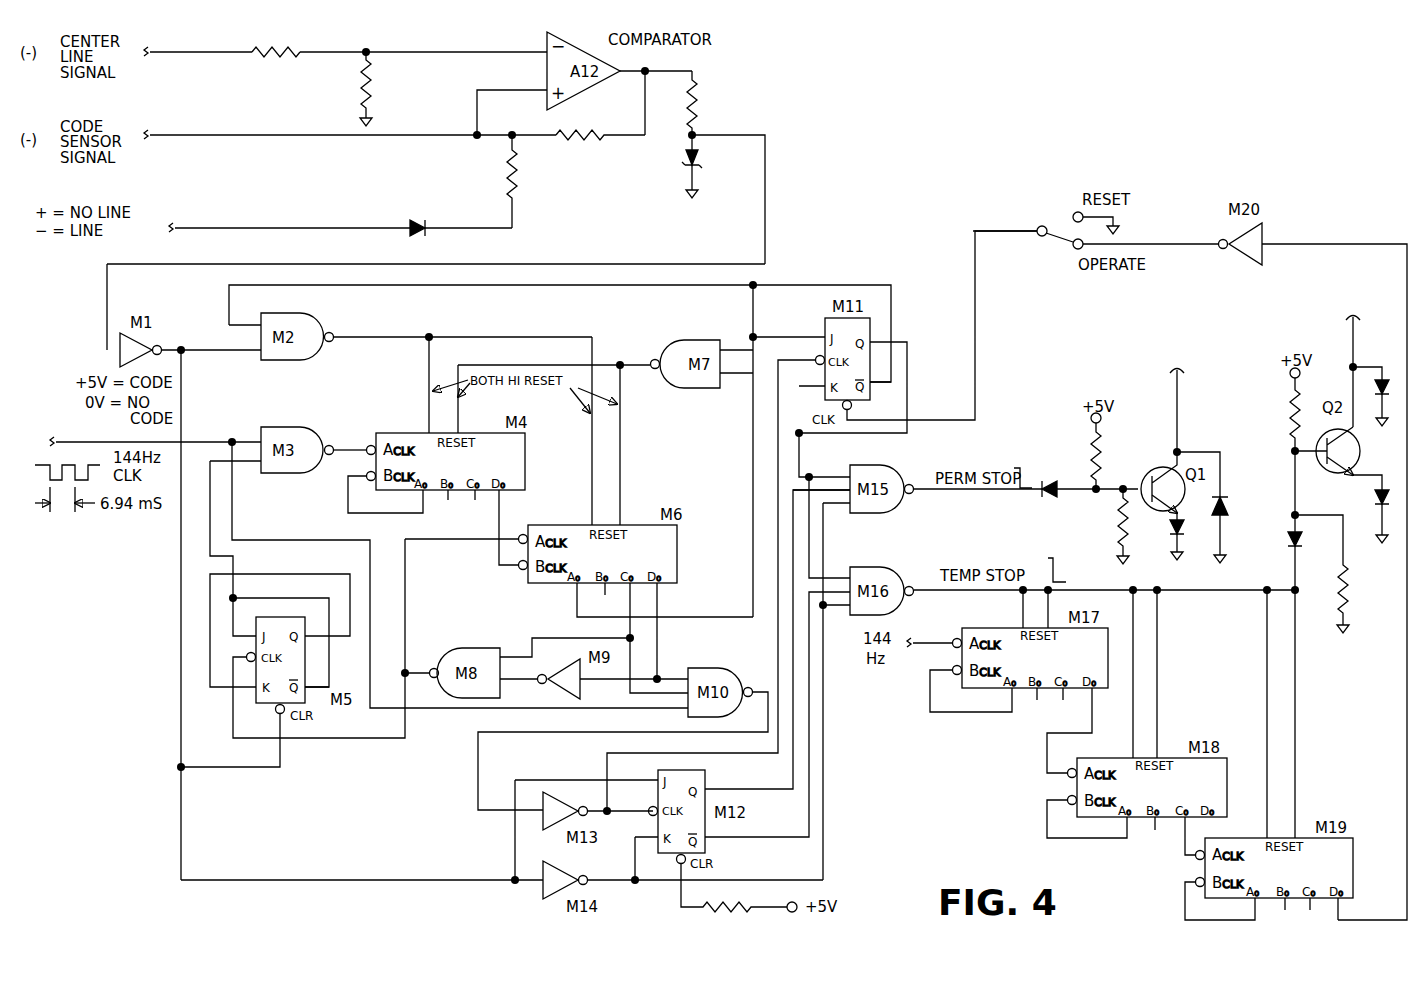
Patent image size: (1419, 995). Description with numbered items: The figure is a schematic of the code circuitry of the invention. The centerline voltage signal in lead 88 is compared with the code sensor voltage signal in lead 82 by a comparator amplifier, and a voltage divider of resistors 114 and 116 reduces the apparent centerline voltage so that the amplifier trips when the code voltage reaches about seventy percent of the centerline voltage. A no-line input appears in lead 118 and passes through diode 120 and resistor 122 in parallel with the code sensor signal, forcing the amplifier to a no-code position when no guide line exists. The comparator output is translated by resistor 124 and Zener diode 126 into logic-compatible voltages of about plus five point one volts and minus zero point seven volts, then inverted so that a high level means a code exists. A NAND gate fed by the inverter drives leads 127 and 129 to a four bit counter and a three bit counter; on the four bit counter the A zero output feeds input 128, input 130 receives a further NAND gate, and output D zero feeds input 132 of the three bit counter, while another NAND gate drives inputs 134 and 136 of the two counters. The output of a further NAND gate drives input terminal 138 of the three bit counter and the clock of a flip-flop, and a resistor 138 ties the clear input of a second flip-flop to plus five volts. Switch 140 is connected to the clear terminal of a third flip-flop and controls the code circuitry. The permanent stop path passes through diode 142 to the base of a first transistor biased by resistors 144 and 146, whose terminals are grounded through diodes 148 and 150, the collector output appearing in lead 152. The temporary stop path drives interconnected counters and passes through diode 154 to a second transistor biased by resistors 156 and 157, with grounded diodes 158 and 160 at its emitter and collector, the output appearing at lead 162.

The lead 82 is at (188, 135).
The lead 88 is at (170, 52).
The resistor 114 is at (290, 50).
The resistor 116 is at (375, 92).
The lead 118 is at (240, 228).
The diode 120 is at (420, 222).
The resistor 122 is at (522, 180).
The resistor 124 is at (700, 95).
The Zener diode 126 is at (700, 165).
The lead 127 is at (427, 369).
The input 128 is at (360, 480).
The lead 129 is at (592, 350).
The input 130 is at (369, 440).
The input 132 is at (520, 569).
The input 134 is at (458, 414).
The input 136 is at (621, 470).
The input terminal 138 is at (523, 534).
The switch 140 is at (1048, 211).
The diode 142 is at (1043, 491).
The resistor 144 is at (1100, 468).
The resistor 146 is at (1120, 522).
The diode 148 is at (1182, 533).
The diode 150 is at (1228, 500).
The lead 152 is at (1180, 407).
The diode 154 is at (1289, 540).
The resistor 156 is at (1289, 414).
The resistor 157 is at (1346, 594).
The diode 158 is at (1373, 500).
The diode 160 is at (1387, 378).
The lead 162 is at (1350, 332).